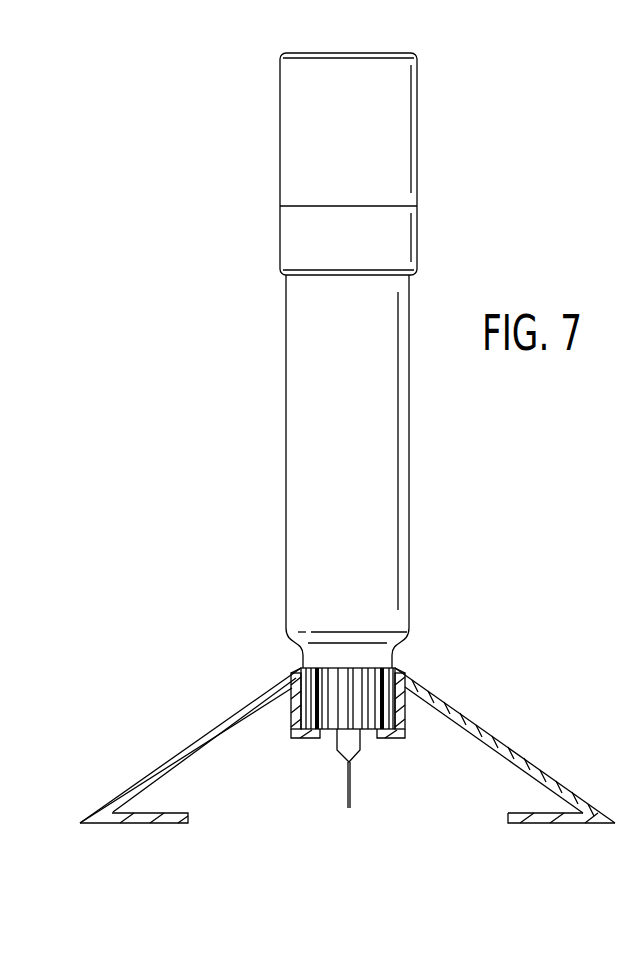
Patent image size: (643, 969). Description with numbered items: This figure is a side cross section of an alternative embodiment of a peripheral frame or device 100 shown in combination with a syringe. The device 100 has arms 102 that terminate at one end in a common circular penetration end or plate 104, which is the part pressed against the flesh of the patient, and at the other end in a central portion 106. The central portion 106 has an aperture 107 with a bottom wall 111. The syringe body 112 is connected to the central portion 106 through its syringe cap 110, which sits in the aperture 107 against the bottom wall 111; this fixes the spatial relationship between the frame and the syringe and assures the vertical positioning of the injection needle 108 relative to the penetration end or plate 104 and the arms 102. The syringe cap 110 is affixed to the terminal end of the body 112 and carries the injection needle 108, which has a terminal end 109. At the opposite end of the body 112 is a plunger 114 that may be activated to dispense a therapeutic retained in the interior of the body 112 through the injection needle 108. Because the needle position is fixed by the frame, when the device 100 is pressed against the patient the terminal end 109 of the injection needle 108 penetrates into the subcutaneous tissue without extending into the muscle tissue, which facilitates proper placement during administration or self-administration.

The peripheral frame or device 100 is at (535, 591).
The arm 102 is at (135, 785).
The penetration end or plate 104 is at (537, 823).
The central portion 106 is at (295, 717).
The aperture 107 is at (398, 708).
The injection needle 108 is at (350, 777).
The terminal end 109 is at (348, 808).
The syringe cap 110 is at (315, 678).
The bottom wall 111 is at (298, 740).
The body 112 is at (409, 442).
The plunger 114 is at (416, 125).